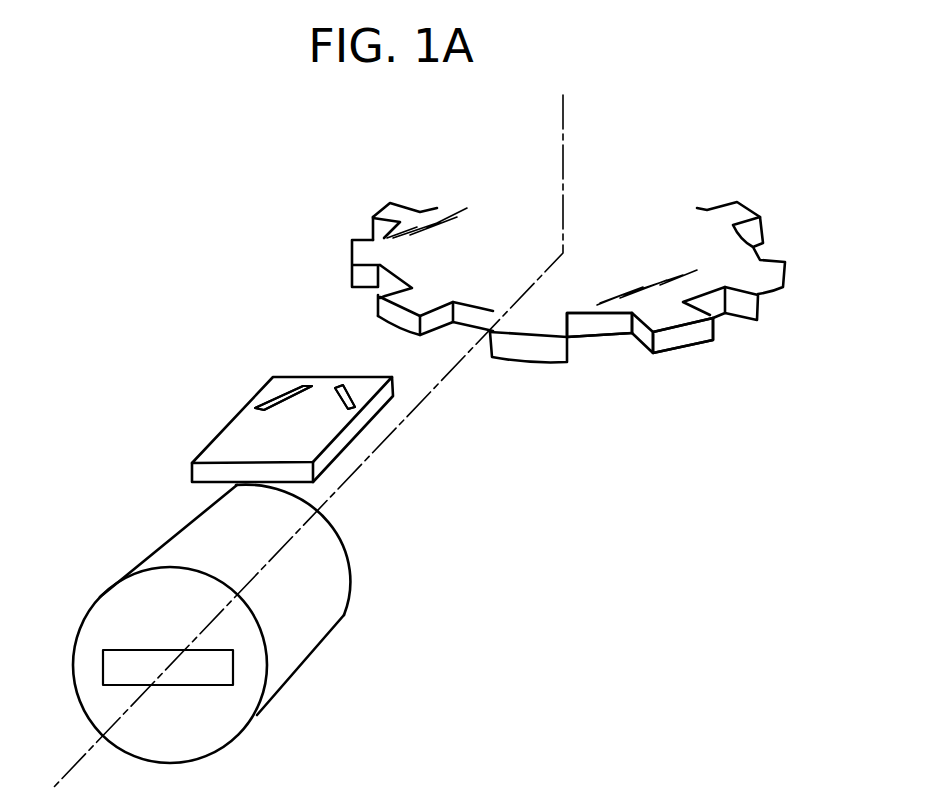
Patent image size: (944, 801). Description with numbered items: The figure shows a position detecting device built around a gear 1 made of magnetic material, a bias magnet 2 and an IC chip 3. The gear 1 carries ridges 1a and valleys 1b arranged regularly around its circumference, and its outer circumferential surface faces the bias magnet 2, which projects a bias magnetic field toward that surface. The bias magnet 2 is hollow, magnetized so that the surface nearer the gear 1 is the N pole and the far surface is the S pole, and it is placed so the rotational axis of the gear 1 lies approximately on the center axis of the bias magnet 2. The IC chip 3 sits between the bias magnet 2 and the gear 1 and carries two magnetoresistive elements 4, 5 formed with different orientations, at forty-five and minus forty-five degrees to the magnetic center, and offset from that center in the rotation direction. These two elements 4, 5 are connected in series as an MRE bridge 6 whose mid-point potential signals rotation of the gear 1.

The gear 1 is at (653, 208).
The ridges 1a is at (692, 348).
The valleys 1b is at (602, 330).
The bias magnet 2 is at (317, 670).
The IC chip 3 is at (215, 430).
The magnetoresistive element 4 is at (287, 388).
The magnetoresistive element 5 is at (342, 387).
The MRE bridge 6 is at (340, 306).